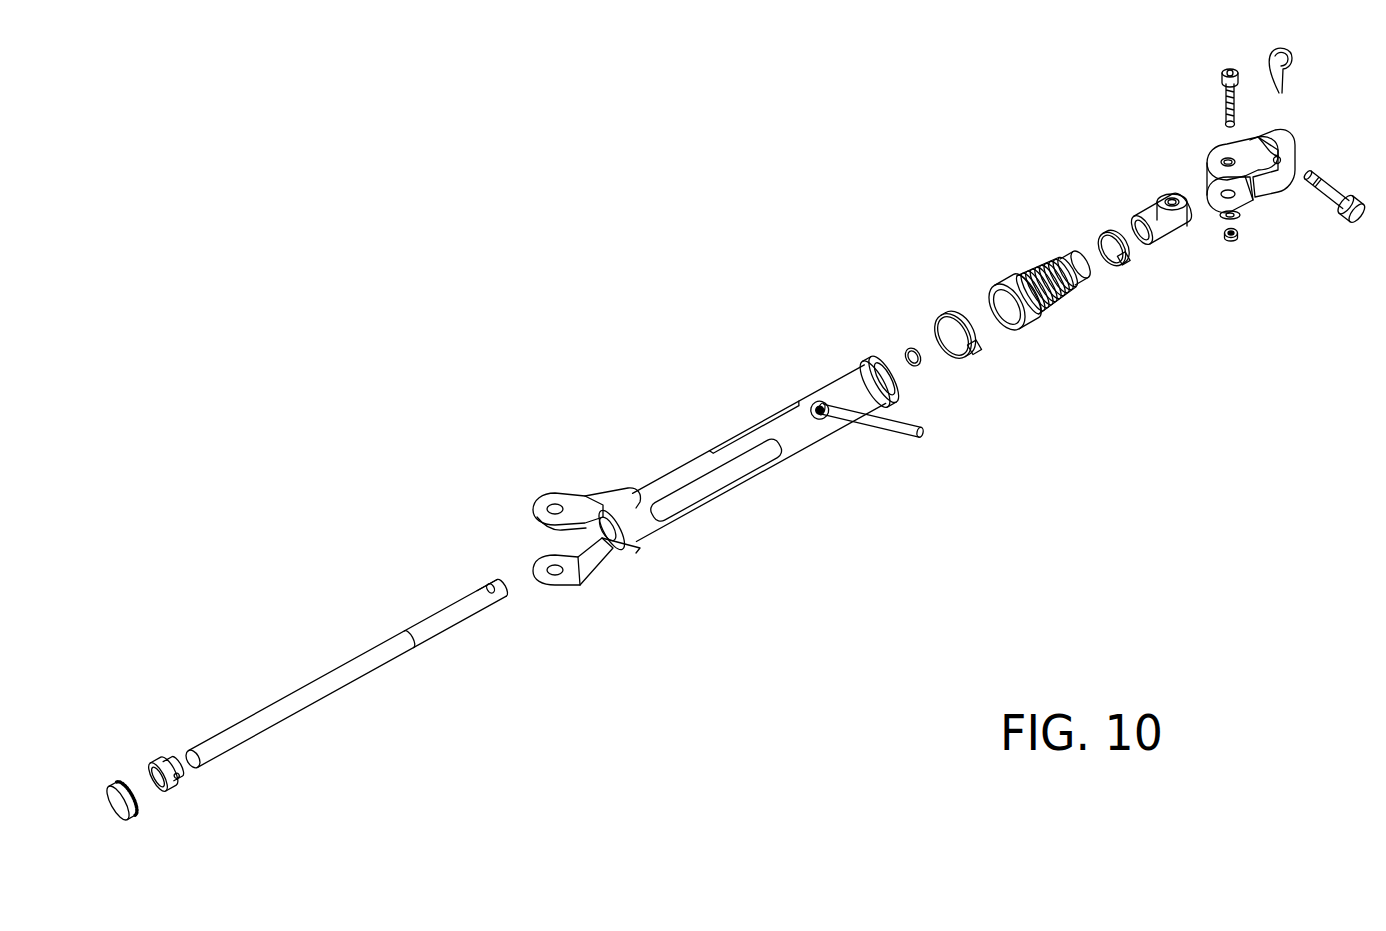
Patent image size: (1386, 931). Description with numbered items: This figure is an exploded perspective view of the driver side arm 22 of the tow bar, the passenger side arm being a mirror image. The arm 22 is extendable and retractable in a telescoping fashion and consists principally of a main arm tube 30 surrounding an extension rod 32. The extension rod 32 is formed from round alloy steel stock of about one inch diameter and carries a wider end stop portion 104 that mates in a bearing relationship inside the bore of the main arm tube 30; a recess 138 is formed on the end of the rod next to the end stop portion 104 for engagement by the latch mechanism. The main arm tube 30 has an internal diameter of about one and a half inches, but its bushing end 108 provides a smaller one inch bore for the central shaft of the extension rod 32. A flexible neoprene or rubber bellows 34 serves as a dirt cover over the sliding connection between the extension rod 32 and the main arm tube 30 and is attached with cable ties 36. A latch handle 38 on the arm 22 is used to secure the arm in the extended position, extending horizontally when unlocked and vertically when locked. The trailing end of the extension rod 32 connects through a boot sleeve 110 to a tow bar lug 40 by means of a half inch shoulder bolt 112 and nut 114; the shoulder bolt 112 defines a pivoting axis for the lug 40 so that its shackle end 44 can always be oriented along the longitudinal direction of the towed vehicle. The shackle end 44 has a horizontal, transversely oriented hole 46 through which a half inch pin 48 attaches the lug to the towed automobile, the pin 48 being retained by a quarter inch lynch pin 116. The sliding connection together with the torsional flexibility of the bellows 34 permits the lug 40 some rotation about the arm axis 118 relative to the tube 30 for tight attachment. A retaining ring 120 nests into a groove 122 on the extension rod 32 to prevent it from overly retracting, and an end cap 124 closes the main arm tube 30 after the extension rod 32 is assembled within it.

The arm 22 is at (520, 258).
The main arm tube 30 is at (700, 463).
The extension rod 32 is at (315, 687).
The bellows 34 is at (1045, 253).
The cable ties 36 is at (950, 313).
The latch handle 38 is at (893, 425).
The tow bar lug 40 is at (1258, 197).
The shackle end 44 is at (1283, 157).
The hole 46 is at (1277, 163).
The pin 48 is at (1320, 183).
The end stop portion 104 is at (160, 760).
The bushing end 108 is at (873, 357).
The boot sleeve 110 is at (1158, 207).
The shoulder bolt 112 is at (1230, 110).
The nut 114 is at (1227, 237).
The lynch pin 116 is at (1285, 82).
The arm axis 118 is at (517, 578).
The retaining ring 120 is at (925, 360).
The groove 122 is at (403, 627).
The end cap 124 is at (113, 782).
The recess 138 is at (185, 777).